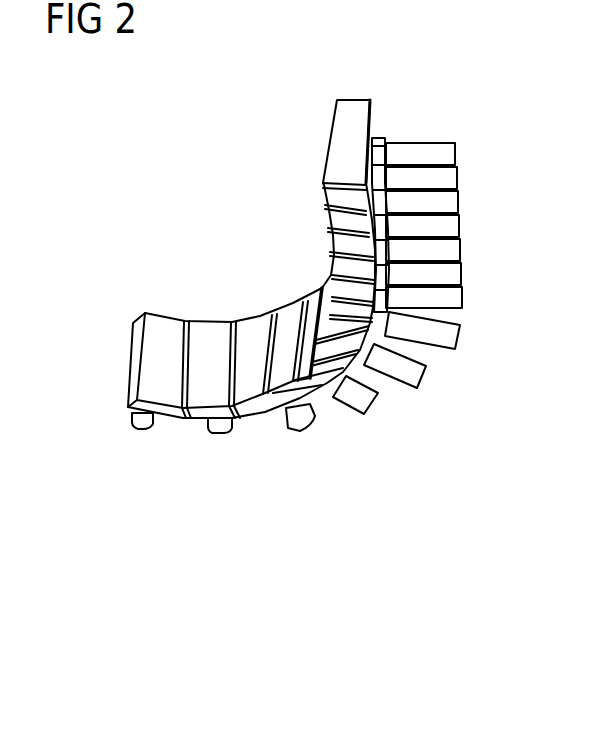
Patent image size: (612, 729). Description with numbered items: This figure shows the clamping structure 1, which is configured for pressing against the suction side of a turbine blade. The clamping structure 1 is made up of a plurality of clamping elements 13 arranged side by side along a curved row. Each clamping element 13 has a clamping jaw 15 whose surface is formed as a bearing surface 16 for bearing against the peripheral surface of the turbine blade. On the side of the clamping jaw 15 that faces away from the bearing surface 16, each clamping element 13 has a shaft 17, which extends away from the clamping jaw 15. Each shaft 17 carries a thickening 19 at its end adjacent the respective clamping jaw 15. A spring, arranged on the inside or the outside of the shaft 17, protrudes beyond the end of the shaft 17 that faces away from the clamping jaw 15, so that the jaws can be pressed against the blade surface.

The clamping structure 1 is at (160, 160).
The clamping element 13 is at (322, 110).
The clamping jaw 15 is at (348, 108).
The bearing surface 16 is at (324, 148).
The shaft 17 is at (435, 152).
The thickening 19 is at (377, 140).